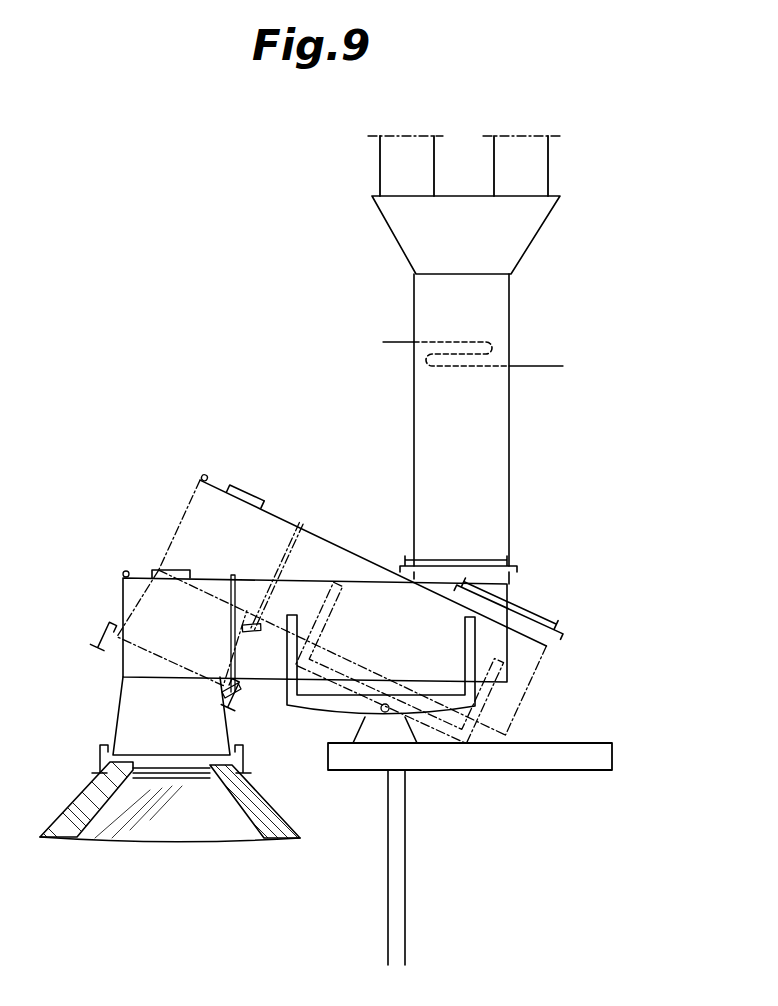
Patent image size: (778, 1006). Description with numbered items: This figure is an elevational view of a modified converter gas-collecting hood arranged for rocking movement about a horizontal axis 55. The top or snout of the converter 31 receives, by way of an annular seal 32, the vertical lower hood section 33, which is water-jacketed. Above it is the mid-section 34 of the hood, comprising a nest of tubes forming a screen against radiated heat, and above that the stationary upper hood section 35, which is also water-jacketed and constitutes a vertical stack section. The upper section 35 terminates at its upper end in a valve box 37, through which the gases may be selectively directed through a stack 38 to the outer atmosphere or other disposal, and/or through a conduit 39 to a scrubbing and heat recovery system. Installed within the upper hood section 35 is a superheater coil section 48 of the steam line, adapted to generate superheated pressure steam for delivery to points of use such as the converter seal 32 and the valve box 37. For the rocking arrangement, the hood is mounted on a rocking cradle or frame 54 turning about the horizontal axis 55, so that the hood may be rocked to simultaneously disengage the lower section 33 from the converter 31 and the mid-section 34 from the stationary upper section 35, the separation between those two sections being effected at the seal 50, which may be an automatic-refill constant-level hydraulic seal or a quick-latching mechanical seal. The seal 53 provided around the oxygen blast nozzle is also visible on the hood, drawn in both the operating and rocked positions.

The converter snout 31 is at (267, 827).
The annular seal 32 is at (112, 610).
The lower hood section 33 is at (118, 700).
The mid-section of hood 34 is at (323, 537).
The upper hood section 35 is at (500, 458).
The valve box 37 is at (520, 247).
The stack 38 is at (383, 150).
The conduit 39 is at (541, 153).
The superheater coil section 48 is at (437, 367).
The seal 50 is at (520, 568).
The oxygen blast nozzle seal 53 is at (248, 490).
The rocking cradle 54 is at (320, 667).
The horizontal axis 55 is at (383, 713).